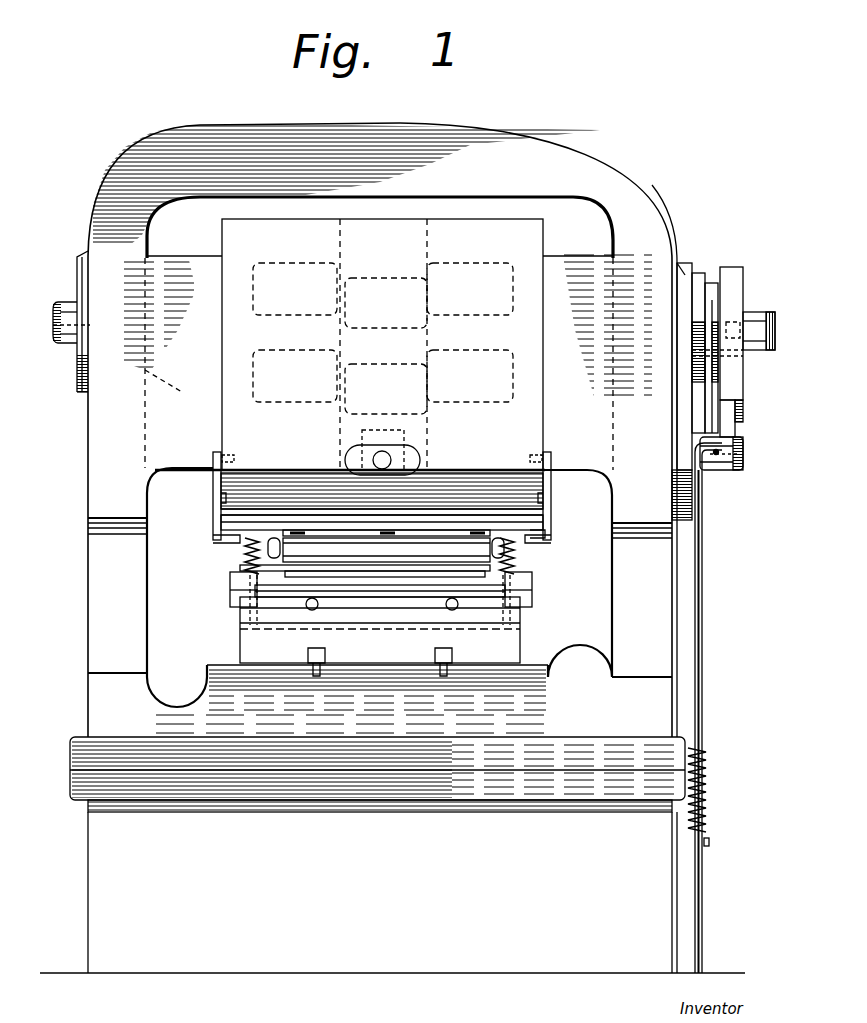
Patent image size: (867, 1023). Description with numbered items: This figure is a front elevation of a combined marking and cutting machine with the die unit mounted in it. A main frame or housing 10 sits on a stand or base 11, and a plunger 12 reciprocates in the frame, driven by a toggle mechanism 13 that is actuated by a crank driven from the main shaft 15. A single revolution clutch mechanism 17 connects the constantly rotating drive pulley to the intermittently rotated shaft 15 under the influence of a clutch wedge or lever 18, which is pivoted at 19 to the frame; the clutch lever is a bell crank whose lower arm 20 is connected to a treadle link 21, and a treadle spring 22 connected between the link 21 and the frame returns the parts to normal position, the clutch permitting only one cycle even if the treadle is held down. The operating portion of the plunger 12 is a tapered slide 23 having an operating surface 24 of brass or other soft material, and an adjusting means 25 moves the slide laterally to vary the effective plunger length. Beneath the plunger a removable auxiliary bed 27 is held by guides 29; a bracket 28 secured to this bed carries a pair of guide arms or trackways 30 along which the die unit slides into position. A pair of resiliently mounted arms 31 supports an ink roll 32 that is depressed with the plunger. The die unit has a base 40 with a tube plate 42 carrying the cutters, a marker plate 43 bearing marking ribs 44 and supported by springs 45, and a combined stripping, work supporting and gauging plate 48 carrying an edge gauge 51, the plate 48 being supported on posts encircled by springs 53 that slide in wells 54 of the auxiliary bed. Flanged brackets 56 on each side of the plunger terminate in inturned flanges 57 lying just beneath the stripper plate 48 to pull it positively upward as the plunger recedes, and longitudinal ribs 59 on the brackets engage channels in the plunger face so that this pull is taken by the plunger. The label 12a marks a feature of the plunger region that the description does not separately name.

The main frame 10 is at (556, 153).
The base 11 is at (90, 864).
The plunger 12 is at (224, 425).
The plate extension 12a is at (738, 313).
The toggle mechanism 13 is at (272, 322).
The main shaft 15 is at (756, 322).
The single revolution clutch mechanism 17 is at (712, 300).
The clutch wedge 18 is at (714, 412).
The pivot 19 is at (765, 456).
The lower arm 20 is at (708, 470).
The treadle link 21 is at (704, 898).
The treadle spring 22 is at (708, 812).
The tapered slide 23 is at (232, 498).
The operating surface 24 is at (232, 513).
The adjusting means 25 is at (386, 458).
The auxiliary bed 27 is at (286, 667).
The bracket 28 is at (266, 612).
The guides 29 is at (433, 655).
The guide arms 30 is at (238, 593).
The arms 31 is at (274, 540).
The ink roll 32 is at (316, 546).
The die base 40 is at (422, 588).
The tube plate 42 is at (468, 612).
The marker plate 43 is at (330, 568).
The marking ribs 44 is at (402, 574).
The springs 45 is at (293, 567).
The stripper plate 48 is at (528, 533).
The edge gauge 51 is at (453, 528).
The springs 53 is at (246, 560).
The wells 54 is at (250, 620).
The flanged brackets 56 is at (213, 488).
The inturned flange 57 is at (224, 541).
The ribs 59 is at (224, 498).